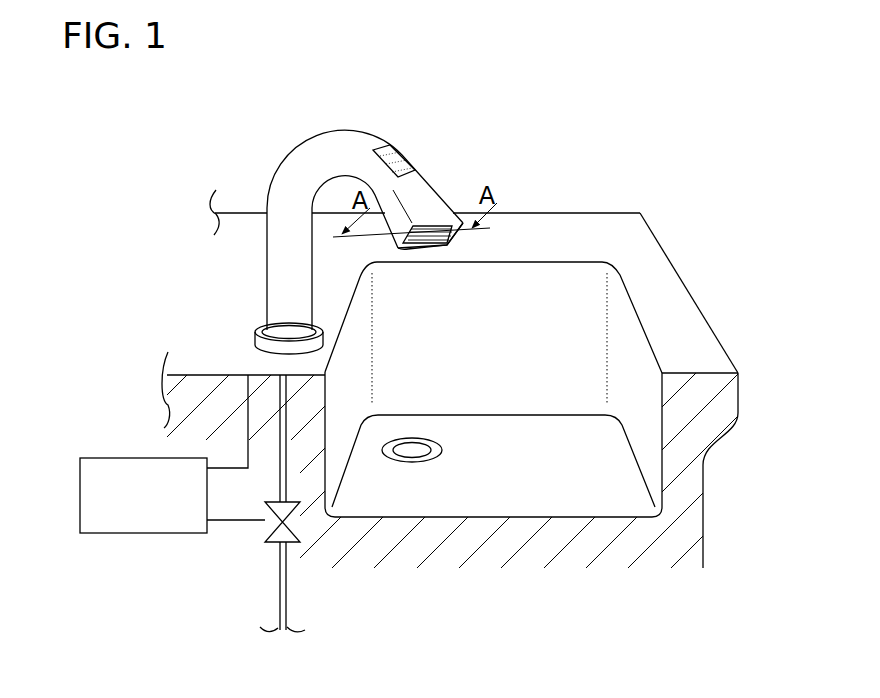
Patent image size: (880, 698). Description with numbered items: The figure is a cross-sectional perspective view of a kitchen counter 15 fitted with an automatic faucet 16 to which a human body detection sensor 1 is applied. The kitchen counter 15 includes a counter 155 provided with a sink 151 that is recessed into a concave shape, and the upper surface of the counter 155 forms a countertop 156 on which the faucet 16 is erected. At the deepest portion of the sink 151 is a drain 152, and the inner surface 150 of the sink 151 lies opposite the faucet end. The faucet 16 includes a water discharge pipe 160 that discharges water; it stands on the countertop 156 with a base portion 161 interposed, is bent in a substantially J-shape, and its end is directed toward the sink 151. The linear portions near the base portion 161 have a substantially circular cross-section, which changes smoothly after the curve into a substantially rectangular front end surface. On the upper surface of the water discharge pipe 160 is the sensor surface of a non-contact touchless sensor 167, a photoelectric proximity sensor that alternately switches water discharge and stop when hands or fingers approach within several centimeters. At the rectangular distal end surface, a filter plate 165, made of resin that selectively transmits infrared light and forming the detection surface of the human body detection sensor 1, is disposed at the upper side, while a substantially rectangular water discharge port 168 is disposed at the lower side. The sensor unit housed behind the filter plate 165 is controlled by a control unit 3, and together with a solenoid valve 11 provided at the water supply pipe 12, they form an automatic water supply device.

The human body detection sensor 1 is at (210, 118).
The control unit 3 is at (135, 522).
The solenoid valve 11 is at (263, 530).
The water supply pipe 12 is at (279, 598).
The kitchen counter 15 is at (617, 191).
The faucet 16 is at (401, 125).
The inner surface of the sink 150 is at (618, 349).
The sink 151 is at (557, 282).
The drain 152 is at (425, 443).
The counter 155 is at (677, 249).
The countertop 156 is at (633, 243).
The water discharge pipe 160 is at (280, 247).
The base portion 161 is at (257, 330).
The filter plate 165 is at (438, 247).
The touchless sensor 167 is at (408, 156).
The water discharge port 168 is at (448, 253).